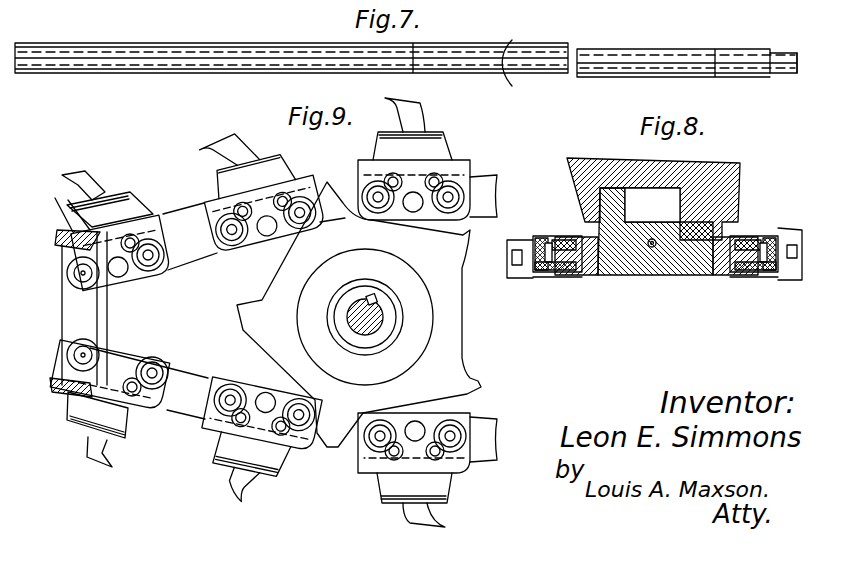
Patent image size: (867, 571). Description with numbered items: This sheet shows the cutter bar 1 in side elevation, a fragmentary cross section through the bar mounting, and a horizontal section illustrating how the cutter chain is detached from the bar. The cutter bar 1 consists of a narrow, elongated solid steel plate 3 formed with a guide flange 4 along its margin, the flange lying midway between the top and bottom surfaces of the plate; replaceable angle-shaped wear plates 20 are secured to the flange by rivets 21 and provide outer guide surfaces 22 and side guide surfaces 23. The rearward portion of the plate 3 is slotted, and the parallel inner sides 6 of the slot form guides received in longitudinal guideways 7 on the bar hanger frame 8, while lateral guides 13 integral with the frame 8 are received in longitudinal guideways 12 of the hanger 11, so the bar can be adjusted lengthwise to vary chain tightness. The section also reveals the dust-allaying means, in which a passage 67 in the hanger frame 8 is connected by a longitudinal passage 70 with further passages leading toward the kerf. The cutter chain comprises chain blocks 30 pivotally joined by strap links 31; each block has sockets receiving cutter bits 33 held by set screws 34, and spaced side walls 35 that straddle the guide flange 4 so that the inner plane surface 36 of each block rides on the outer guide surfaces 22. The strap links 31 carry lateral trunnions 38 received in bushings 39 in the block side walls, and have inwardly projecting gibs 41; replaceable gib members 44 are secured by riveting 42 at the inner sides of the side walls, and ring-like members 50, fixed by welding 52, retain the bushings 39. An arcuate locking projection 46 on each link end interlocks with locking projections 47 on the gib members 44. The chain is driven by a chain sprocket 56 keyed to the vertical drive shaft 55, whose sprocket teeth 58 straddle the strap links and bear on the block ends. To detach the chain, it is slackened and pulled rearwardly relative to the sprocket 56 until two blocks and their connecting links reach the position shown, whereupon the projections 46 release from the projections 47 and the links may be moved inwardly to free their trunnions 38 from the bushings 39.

In FIG. 7, the cutter bar 1 is at (658, 49).
In FIG. 7, the plate 3 is at (496, 92).
In FIG. 8, the plate 3 is at (592, 270).
In FIG. 7, the guide flange 4 is at (773, 55).
In FIG. 8, the guide flange 4 is at (550, 242).
In FIG. 8, the inner sides 6 is at (693, 276).
In FIG. 8, the guideways 7 is at (618, 276).
In FIG. 8, the bar hanger frame 8 is at (672, 276).
In FIG. 8, the hanger 11 is at (585, 170).
In FIG. 8, the guideways 12 is at (610, 187).
In FIG. 8, the lateral guides 13 is at (715, 178).
In FIG. 7, the wear plates 20 is at (598, 72).
In FIG. 8, the wear plates 20 is at (575, 272).
In FIG. 8, the rivets 21 is at (540, 245).
In FIG. 7, the outer guide surfaces 22 is at (797, 60).
In FIG. 8, the outer guide surfaces 22 is at (540, 270).
In FIG. 7, the side guide surfaces 23 is at (512, 86).
In FIG. 8, the side guide surfaces 23 is at (563, 240).
In FIG. 9, the chain blocks 30 is at (140, 212).
In FIG. 8, the chain blocks 30 is at (533, 277).
In FIG. 9, the strap links 31 is at (68, 317).
In FIG. 8, the strap links 31 is at (725, 275).
In FIG. 9, the cutter bits 33 is at (103, 188).
In FIG. 8, the set screws 34 is at (515, 248).
In FIG. 9, the side walls 35 is at (462, 405).
In FIG. 8, the side walls 35 is at (556, 272).
In FIG. 9, the inner plane surface 36 is at (62, 366).
In FIG. 8, the inner plane surface 36 is at (530, 262).
In FIG. 9, the trunnions 38 is at (162, 362).
In FIG. 9, the bushings 39 is at (163, 352).
In FIG. 9, the gibs 41 is at (98, 303).
In FIG. 9, the riveting 42 is at (266, 232).
In FIG. 9, the replaceable gib members 44 is at (62, 178).
In FIG. 9, the locking projection 46 is at (72, 242).
In FIG. 9, the locking projections 47 is at (118, 360).
In FIG. 9, the ring-like members 50 is at (134, 396).
In FIG. 9, the welding 52 is at (130, 405).
In FIG. 9, the drive shaft 55 is at (372, 305).
In FIG. 9, the chain sprocket 56 is at (272, 342).
In FIG. 9, the sprocket teeth 58 is at (470, 380).
In FIG. 8, the passage 67 is at (652, 205).
In FIG. 8, the longitudinal passage 70 is at (652, 248).